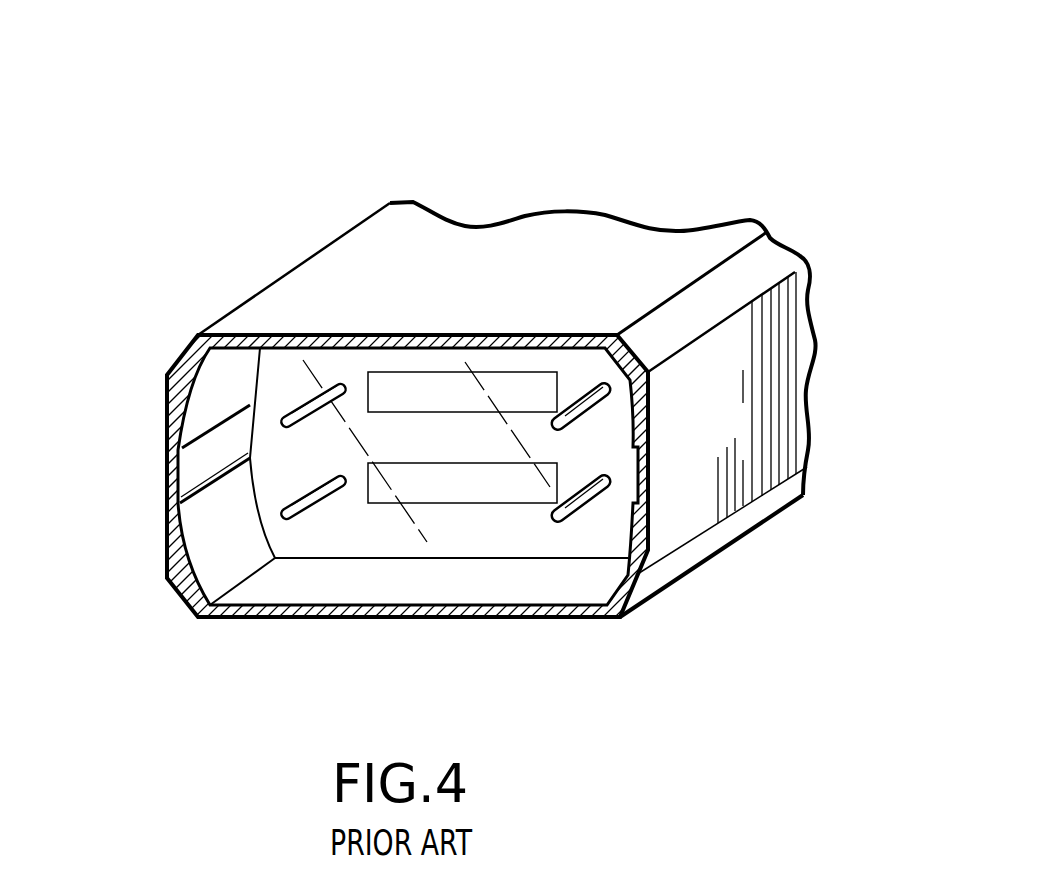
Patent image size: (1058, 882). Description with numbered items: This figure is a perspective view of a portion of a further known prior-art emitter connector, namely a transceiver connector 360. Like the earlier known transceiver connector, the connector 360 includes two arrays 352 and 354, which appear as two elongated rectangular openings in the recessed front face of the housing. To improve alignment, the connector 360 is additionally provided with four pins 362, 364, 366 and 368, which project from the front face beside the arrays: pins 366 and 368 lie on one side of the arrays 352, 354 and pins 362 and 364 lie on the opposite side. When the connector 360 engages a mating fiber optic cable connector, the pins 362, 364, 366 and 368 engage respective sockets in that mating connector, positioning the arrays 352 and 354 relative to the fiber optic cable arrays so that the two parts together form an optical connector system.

The transceiver connector 360 is at (565, 182).
The array 352 is at (432, 390).
The array 354 is at (465, 490).
The pin 362 is at (585, 402).
The pin 364 is at (583, 503).
The pin 366 is at (297, 415).
The pin 368 is at (293, 512).